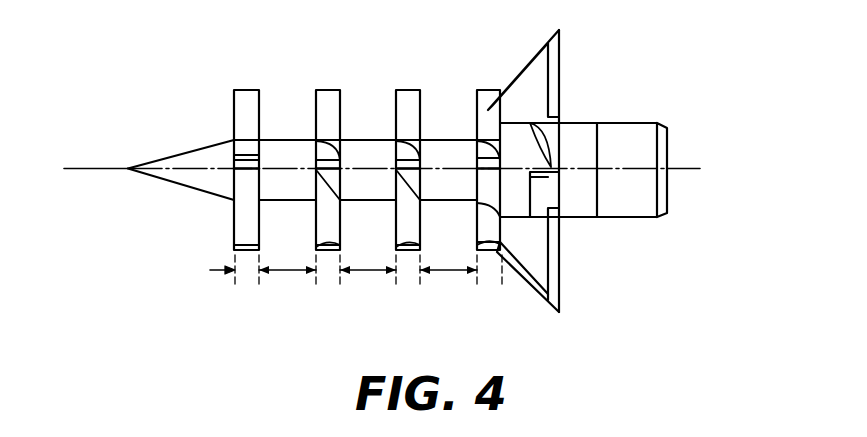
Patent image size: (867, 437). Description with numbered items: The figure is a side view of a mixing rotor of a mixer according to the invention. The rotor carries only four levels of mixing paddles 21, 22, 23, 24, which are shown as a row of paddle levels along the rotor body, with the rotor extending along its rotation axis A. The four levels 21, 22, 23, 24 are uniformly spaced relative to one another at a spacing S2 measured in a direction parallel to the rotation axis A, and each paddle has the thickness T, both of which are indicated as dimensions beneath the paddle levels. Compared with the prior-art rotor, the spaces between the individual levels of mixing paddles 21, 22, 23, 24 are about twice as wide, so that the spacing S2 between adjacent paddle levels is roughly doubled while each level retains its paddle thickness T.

The level of mixing paddles 21 is at (488, 108).
The level of mixing paddles 22 is at (410, 105).
The level of mixing paddles 23 is at (330, 105).
The level of mixing paddles 24 is at (249, 105).
The rotation axis A is at (91, 165).
The thickness T is at (247, 272).
The spacing S2 is at (288, 272).